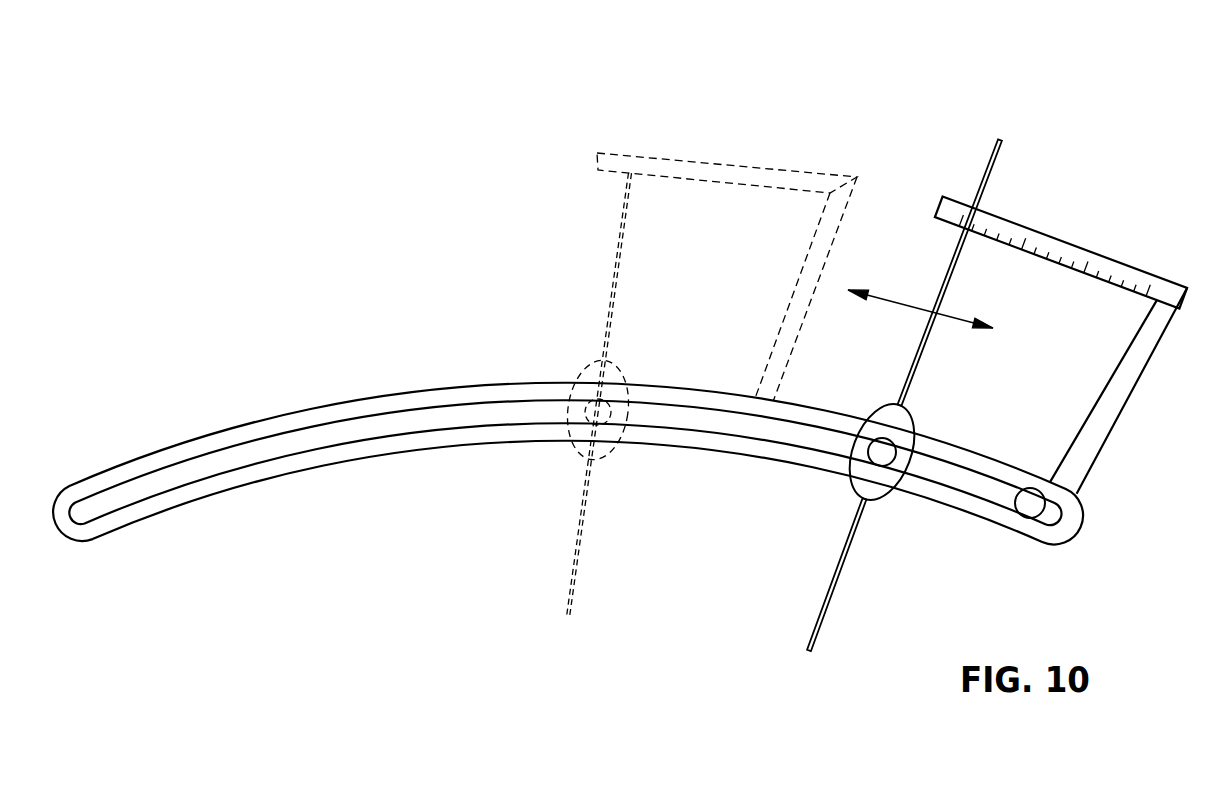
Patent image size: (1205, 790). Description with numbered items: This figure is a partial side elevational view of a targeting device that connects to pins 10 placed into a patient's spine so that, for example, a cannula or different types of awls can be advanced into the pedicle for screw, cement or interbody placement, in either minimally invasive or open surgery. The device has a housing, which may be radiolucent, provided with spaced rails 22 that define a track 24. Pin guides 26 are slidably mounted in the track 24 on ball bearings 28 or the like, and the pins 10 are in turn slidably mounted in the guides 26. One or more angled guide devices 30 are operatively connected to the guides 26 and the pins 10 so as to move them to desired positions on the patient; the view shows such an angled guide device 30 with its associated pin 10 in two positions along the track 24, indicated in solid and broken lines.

The pin 10 is at (613, 279).
The rail 22 is at (240, 477).
The track 24 is at (340, 432).
The pin guide 26 is at (587, 362).
The ball bearing 28 is at (615, 440).
The angled guide device 30 is at (706, 162).